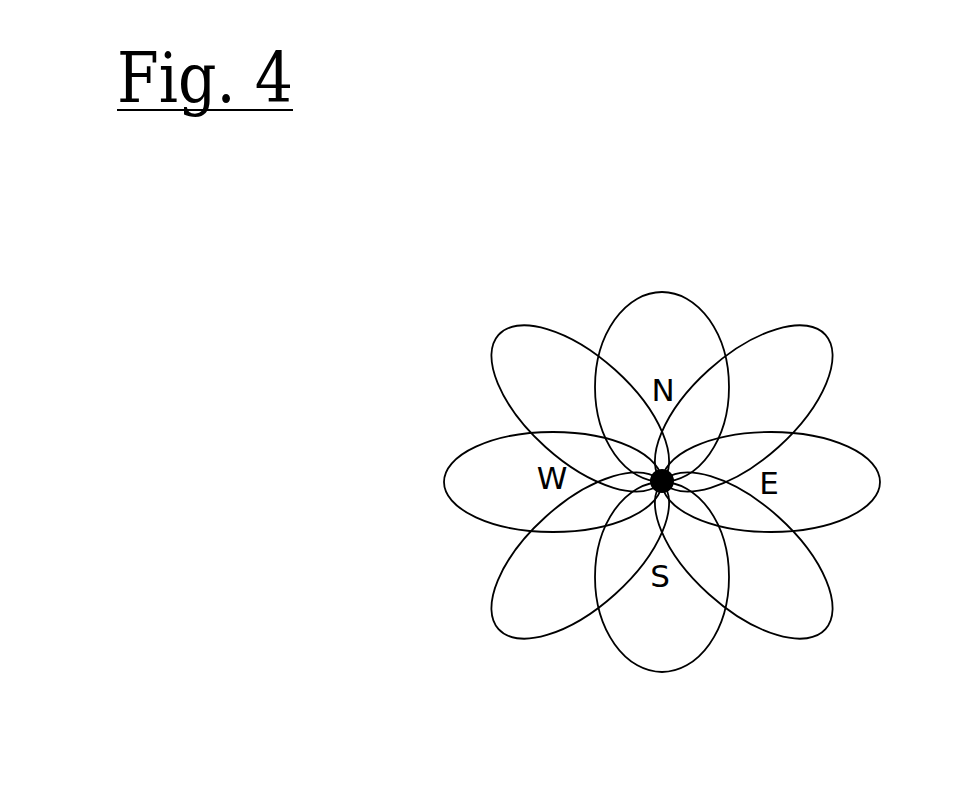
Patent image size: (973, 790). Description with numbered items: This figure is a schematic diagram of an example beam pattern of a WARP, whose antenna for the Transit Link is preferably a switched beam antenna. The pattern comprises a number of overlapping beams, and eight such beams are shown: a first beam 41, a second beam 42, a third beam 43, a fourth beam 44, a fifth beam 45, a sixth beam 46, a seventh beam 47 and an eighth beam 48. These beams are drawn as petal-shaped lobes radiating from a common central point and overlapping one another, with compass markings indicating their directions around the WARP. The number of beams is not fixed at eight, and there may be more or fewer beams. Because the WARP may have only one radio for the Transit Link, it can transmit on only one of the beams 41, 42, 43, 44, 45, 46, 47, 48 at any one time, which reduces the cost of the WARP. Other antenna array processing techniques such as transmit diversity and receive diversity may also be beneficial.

The beam 41 is at (662, 365).
The beam 42 is at (743, 408).
The beam 43 is at (795, 482).
The beam 44 is at (753, 558).
The beam 45 is at (662, 597).
The beam 46 is at (574, 558).
The beam 47 is at (520, 482).
The beam 48 is at (580, 407).